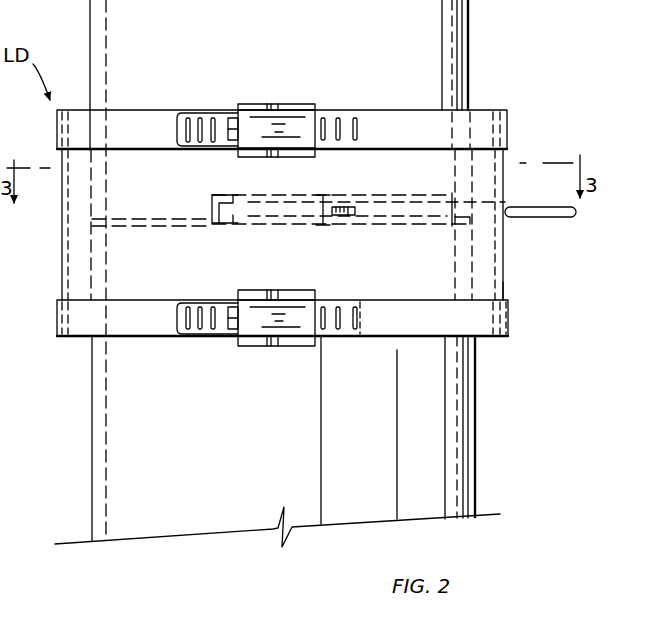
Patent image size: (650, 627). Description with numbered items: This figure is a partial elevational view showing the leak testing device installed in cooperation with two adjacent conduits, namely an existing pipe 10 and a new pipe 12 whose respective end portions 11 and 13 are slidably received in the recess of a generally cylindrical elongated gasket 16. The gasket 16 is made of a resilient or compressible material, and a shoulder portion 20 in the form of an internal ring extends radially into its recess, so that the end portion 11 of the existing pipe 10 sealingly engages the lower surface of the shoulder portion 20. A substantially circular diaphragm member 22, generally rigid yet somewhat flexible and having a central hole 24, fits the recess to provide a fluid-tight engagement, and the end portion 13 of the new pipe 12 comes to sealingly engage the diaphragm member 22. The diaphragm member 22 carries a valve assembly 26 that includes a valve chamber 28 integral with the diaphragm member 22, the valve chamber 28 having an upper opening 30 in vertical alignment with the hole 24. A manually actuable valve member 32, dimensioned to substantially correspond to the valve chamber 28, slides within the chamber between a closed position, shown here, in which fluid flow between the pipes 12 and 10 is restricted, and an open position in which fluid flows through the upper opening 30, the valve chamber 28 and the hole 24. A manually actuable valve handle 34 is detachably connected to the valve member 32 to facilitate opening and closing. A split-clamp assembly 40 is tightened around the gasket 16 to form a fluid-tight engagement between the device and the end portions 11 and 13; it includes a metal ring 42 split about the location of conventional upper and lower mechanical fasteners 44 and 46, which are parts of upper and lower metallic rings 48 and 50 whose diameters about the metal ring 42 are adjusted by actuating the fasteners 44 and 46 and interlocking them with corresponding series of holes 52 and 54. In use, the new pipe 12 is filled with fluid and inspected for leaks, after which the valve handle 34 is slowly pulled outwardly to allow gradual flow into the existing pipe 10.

The existing pipe 10 is at (477, 452).
The end portion of existing pipe 11 is at (453, 267).
The new pipe 12 is at (470, 65).
The end portion of new pipe 13 is at (112, 170).
The gasket 16 is at (75, 282).
The shoulder portion 20 is at (93, 233).
The diaphragm member 22 is at (163, 219).
The hole 24 is at (261, 228).
The valve assembly 26 is at (365, 184).
The valve chamber 28 is at (423, 193).
The upper opening 30 is at (250, 193).
The valve member 32 is at (302, 217).
The valve handle 34 is at (548, 218).
The split-clamp assembly 40 is at (70, 355).
The metal ring 42 is at (505, 283).
The upper mechanical fastener 44 is at (281, 104).
The lower mechanical fastener 46 is at (262, 347).
The upper metallic ring 48 is at (412, 110).
The lower metallic ring 50 is at (508, 318).
The series of holes 52 is at (212, 118).
The series of holes 54 is at (212, 331).